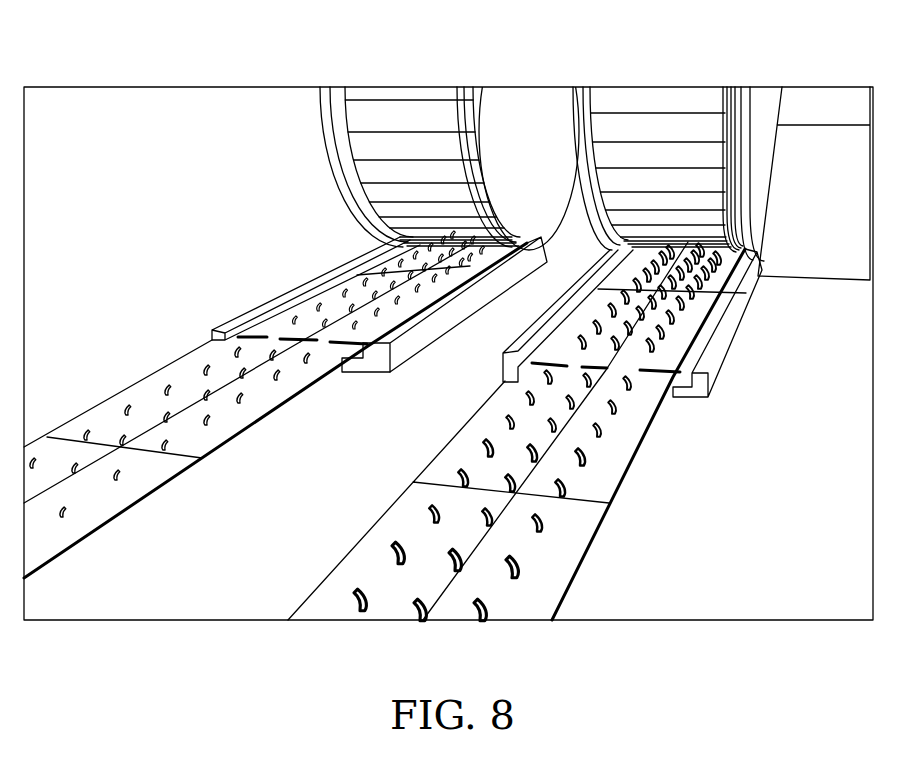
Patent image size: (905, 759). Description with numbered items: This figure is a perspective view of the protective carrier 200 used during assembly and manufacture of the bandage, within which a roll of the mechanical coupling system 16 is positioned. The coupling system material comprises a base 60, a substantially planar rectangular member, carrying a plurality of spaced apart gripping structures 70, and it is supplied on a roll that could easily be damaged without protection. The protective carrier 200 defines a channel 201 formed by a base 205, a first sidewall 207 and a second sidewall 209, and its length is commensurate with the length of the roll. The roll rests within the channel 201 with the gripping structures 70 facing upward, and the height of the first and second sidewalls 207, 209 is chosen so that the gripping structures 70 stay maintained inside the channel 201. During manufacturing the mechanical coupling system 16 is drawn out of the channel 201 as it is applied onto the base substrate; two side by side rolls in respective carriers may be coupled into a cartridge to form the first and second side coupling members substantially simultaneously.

The mechanical coupling system 16 is at (275, 410).
The base 60 is at (139, 392).
The gripping structures 70 is at (85, 431).
The protective carrier 200 is at (316, 134).
The channel 201 is at (375, 317).
The base 205 is at (354, 373).
The first sidewall 207 is at (230, 322).
The second sidewall 209 is at (444, 331).